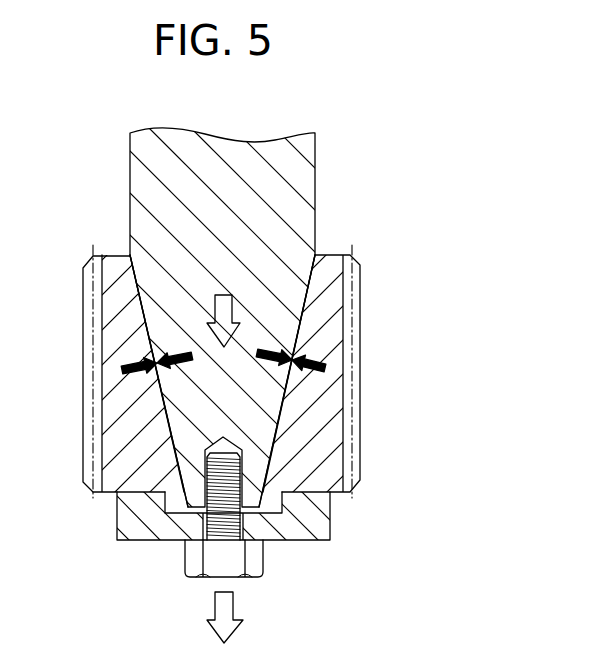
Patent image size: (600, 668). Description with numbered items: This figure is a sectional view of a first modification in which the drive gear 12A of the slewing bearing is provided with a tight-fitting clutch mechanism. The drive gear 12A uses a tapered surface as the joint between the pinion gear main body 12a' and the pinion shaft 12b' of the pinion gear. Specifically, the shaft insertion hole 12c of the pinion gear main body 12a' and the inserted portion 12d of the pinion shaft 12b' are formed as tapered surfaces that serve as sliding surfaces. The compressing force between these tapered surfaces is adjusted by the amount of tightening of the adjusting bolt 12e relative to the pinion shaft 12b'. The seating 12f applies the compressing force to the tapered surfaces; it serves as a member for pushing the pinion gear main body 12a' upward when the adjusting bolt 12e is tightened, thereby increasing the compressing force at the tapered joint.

The drive gear 12A is at (476, 221).
The pinion gear main body 12a' is at (235, 411).
The pinion shaft 12b' is at (277, 317).
The shaft insertion hole 12c is at (170, 430).
The inserted portion 12d is at (148, 405).
The adjusting bolt 12e is at (257, 562).
The seating 12f is at (142, 542).